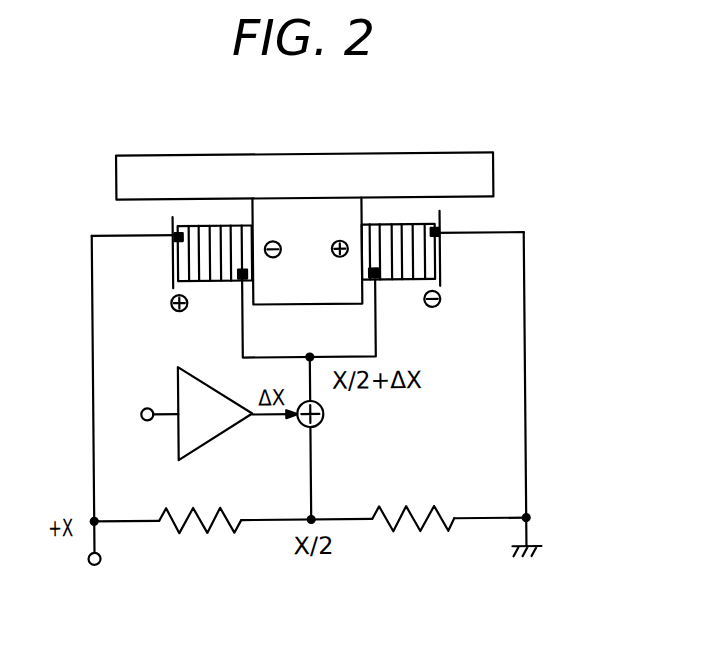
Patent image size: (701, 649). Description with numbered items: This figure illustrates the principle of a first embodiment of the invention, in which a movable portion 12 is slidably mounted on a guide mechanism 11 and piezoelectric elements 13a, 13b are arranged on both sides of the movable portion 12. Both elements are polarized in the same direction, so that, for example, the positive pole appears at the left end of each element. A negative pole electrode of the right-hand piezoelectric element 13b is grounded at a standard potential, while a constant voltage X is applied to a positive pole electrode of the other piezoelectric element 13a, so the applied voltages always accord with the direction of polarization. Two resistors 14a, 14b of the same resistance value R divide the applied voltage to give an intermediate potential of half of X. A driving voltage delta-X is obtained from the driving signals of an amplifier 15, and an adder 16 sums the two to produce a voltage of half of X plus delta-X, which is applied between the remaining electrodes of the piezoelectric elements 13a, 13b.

The guide mechanism 11 is at (298, 154).
The movable portion 12 is at (310, 305).
The piezoelectric element 13a is at (176, 259).
The piezoelectric element 13b is at (437, 258).
The resistor 14a is at (171, 528).
The resistor 14b is at (450, 527).
The amplifier 15 is at (176, 388).
The adder 16 is at (323, 419).